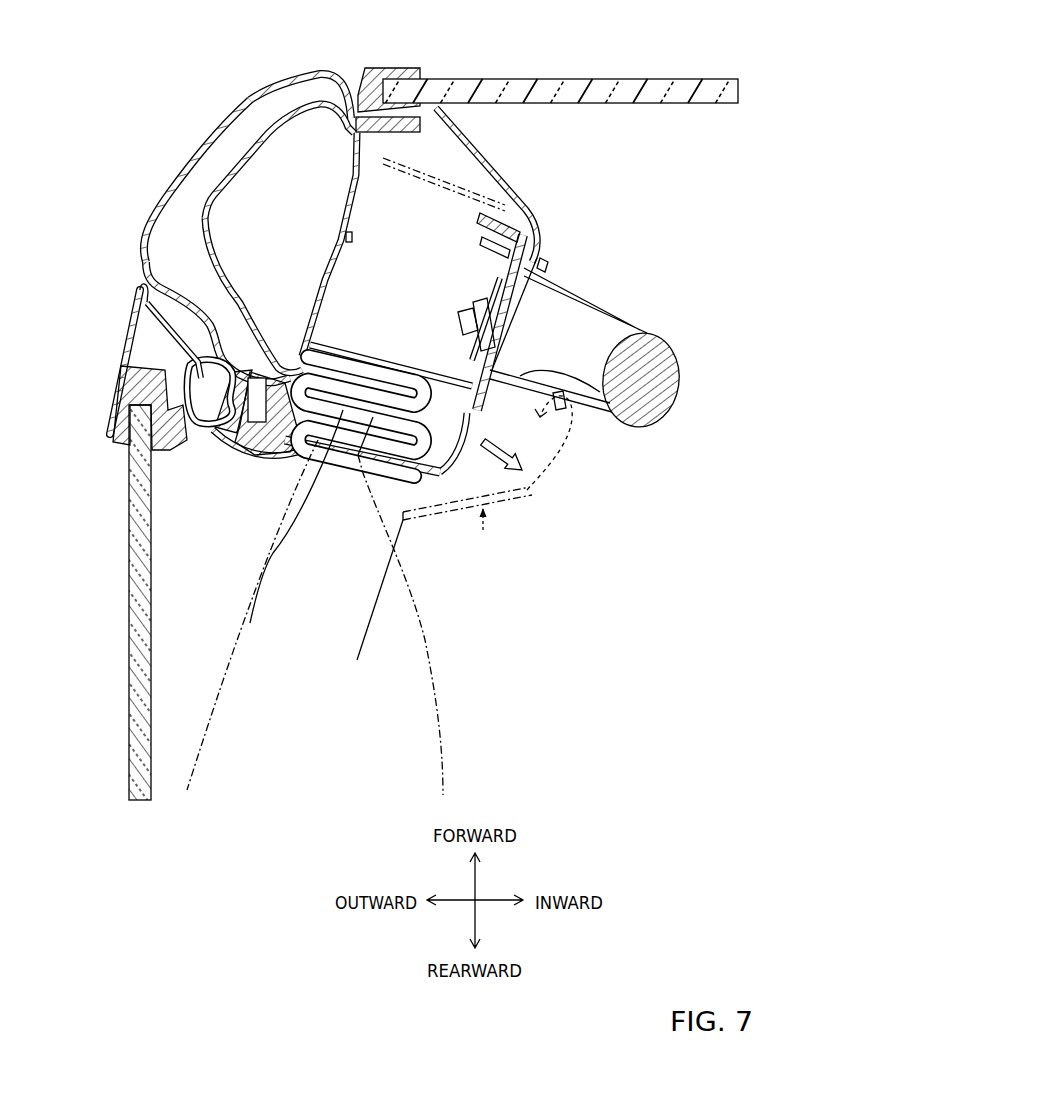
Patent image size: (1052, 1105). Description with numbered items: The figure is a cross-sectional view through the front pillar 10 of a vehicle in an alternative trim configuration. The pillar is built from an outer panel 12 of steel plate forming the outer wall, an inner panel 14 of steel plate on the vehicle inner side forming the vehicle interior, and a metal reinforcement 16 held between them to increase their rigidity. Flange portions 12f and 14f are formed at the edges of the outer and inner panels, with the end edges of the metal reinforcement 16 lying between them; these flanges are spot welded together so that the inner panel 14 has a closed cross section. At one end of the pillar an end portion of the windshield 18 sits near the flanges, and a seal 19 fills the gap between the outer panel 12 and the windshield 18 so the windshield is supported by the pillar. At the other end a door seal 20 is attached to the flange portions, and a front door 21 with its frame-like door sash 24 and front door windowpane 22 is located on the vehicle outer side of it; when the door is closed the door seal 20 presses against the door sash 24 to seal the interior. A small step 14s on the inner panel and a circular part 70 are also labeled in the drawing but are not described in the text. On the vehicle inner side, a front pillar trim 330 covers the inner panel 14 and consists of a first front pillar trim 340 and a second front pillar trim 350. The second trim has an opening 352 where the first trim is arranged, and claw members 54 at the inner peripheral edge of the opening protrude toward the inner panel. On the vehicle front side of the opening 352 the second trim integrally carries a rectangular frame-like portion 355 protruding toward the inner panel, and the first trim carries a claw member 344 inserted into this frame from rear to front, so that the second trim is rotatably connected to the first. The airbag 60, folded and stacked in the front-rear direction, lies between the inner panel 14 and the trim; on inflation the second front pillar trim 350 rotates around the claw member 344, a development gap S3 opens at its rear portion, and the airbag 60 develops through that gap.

The front pillar 10 is at (247, 209).
The outer panel 12 is at (243, 101).
The flange portion 12f is at (396, 104).
The inner panel 14 is at (402, 290).
The flange portion 14f is at (395, 133).
The stopper of inner panel 14s is at (352, 247).
The metal reinforcement 16 is at (235, 178).
The windshield 18 is at (548, 88).
The seal 19 is at (374, 66).
The door seal 20 is at (245, 447).
The front door 21 is at (108, 542).
The front door windowpane 22 is at (143, 503).
The door sash 24 is at (111, 393).
The claw member 54 is at (525, 482).
The airbag 60 is at (343, 410).
The inflator 70 is at (677, 404).
The front pillar trim 330 is at (514, 404).
The first front pillar trim 340 is at (510, 325).
The second front pillar trim 350 is at (445, 475).
The claw member 344 is at (508, 215).
The opening 352 is at (533, 282).
The rectangular frame-like portion 355 is at (480, 243).
The development gap S3 is at (355, 651).